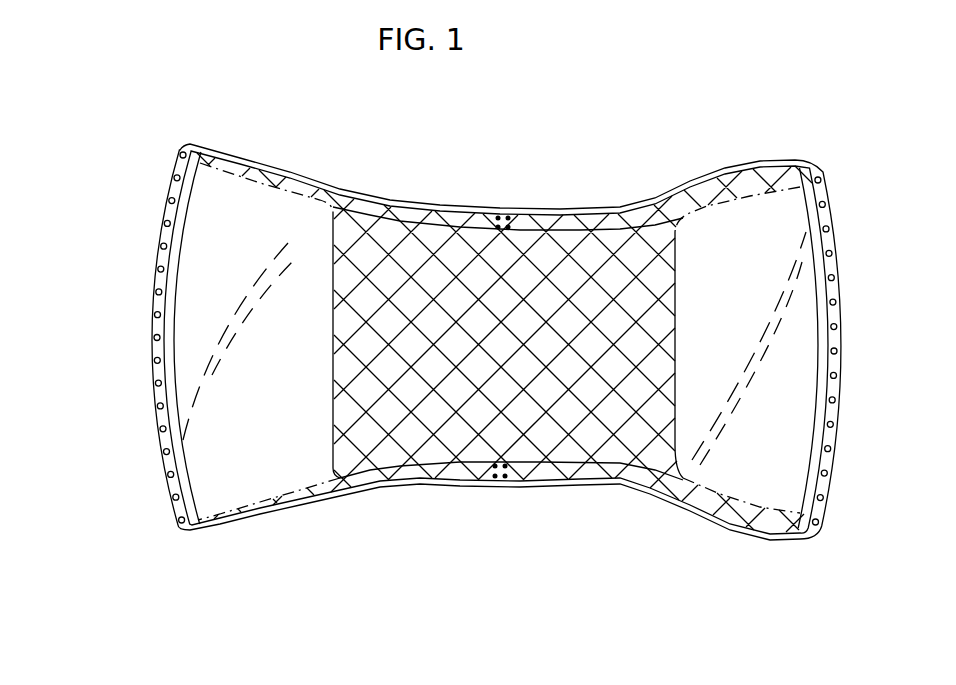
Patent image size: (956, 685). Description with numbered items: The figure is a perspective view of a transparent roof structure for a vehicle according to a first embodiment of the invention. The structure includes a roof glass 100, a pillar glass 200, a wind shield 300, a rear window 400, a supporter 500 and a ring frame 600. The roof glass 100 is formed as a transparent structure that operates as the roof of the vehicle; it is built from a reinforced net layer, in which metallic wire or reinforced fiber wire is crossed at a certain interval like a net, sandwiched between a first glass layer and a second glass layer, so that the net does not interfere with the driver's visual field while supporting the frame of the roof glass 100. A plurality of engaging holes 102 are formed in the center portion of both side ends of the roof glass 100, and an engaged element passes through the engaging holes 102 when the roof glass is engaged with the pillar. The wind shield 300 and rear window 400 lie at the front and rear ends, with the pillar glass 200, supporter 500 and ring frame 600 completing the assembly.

The roof glass 100 is at (415, 442).
The engaging holes 102 is at (500, 478).
The pillar glass 200 is at (249, 503).
The wind shield 300 is at (230, 197).
The rear window 400 is at (727, 218).
The supporter 500 is at (155, 327).
The ring frame 600 is at (498, 205).